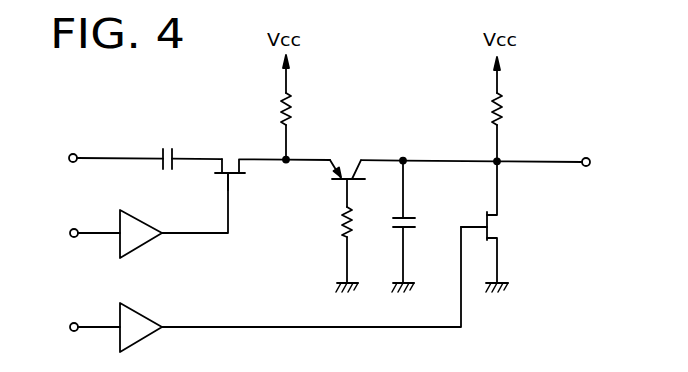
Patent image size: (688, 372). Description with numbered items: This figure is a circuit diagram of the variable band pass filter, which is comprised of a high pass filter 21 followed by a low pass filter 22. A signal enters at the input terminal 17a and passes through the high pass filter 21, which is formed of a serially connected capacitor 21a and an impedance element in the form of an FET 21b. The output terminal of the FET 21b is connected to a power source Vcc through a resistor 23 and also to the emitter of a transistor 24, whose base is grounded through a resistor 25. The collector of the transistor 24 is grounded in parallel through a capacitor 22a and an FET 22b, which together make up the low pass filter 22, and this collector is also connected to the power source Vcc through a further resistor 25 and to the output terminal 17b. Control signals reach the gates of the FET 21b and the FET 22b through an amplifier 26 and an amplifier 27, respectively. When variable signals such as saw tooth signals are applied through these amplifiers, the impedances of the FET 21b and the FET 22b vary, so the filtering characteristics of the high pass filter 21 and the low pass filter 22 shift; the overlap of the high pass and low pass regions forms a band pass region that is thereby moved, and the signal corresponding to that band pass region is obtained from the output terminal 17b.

The input terminal 17a is at (73, 153).
The output terminal 17b is at (587, 156).
The high pass filter 21 is at (250, 149).
The capacitor 21a is at (168, 146).
The FET 21b is at (243, 176).
The low pass filter 22 is at (471, 139).
The capacitor 22a is at (432, 209).
The FET 22b is at (500, 220).
The resistor 23 is at (293, 107).
The transistor 24 is at (344, 165).
The resistor 25 is at (341, 231).
The amplifier 26 is at (150, 223).
The amplifier 27 is at (151, 320).